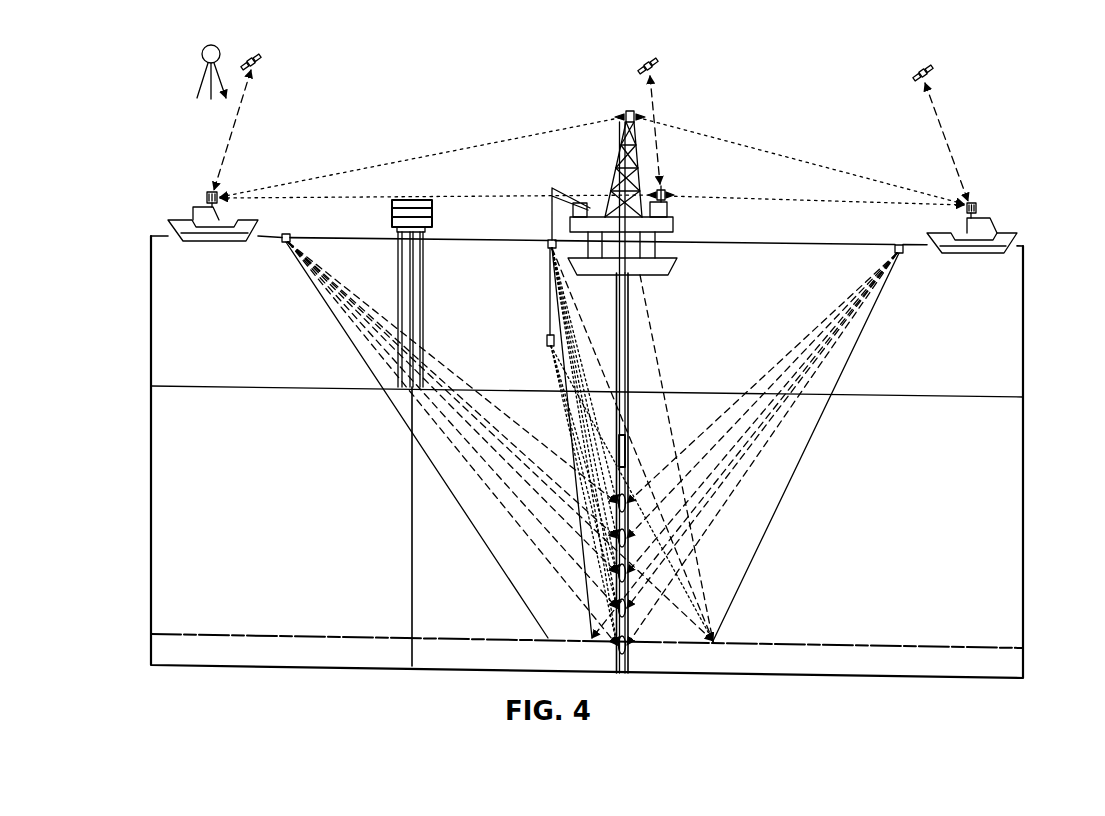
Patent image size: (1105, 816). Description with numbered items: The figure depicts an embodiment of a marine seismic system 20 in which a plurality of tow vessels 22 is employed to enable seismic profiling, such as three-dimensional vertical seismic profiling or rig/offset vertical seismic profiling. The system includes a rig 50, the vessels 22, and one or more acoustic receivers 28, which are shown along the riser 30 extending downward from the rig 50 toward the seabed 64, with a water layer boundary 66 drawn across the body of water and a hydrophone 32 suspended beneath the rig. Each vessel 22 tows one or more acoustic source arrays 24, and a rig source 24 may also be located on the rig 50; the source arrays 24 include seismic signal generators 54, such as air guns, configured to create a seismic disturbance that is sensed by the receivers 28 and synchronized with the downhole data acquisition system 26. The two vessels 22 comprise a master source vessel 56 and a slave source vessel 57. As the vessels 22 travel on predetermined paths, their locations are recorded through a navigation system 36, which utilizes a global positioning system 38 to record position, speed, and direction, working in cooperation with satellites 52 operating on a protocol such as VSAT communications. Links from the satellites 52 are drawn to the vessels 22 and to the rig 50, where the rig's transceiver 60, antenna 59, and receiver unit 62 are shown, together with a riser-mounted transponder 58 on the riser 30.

The seismic system 20 is at (961, 136).
The tow vessel 22 is at (579, 213).
The source array 24 is at (287, 234).
The downhole data acquisition system 26 is at (643, 385).
The acoustic receiver 28 is at (631, 647).
The riser 30 is at (630, 318).
The hydrophone 32 is at (546, 340).
The navigation system 36 is at (230, 117).
The global positioning system 38 is at (186, 63).
The rig 50 is at (666, 174).
The satellite 52 is at (260, 58).
The seismic signal generator 54 is at (286, 244).
The master source vessel 56 is at (170, 230).
The slave source vessel 57 is at (1013, 241).
The riser-mounted transponder 58 is at (628, 442).
The platform antenna 59 is at (669, 167).
The derrick-top transceiver 60 is at (626, 112).
The platform receiver unit 62 is at (668, 210).
The seabed 64 is at (197, 633).
The water layer boundary 66 is at (180, 385).